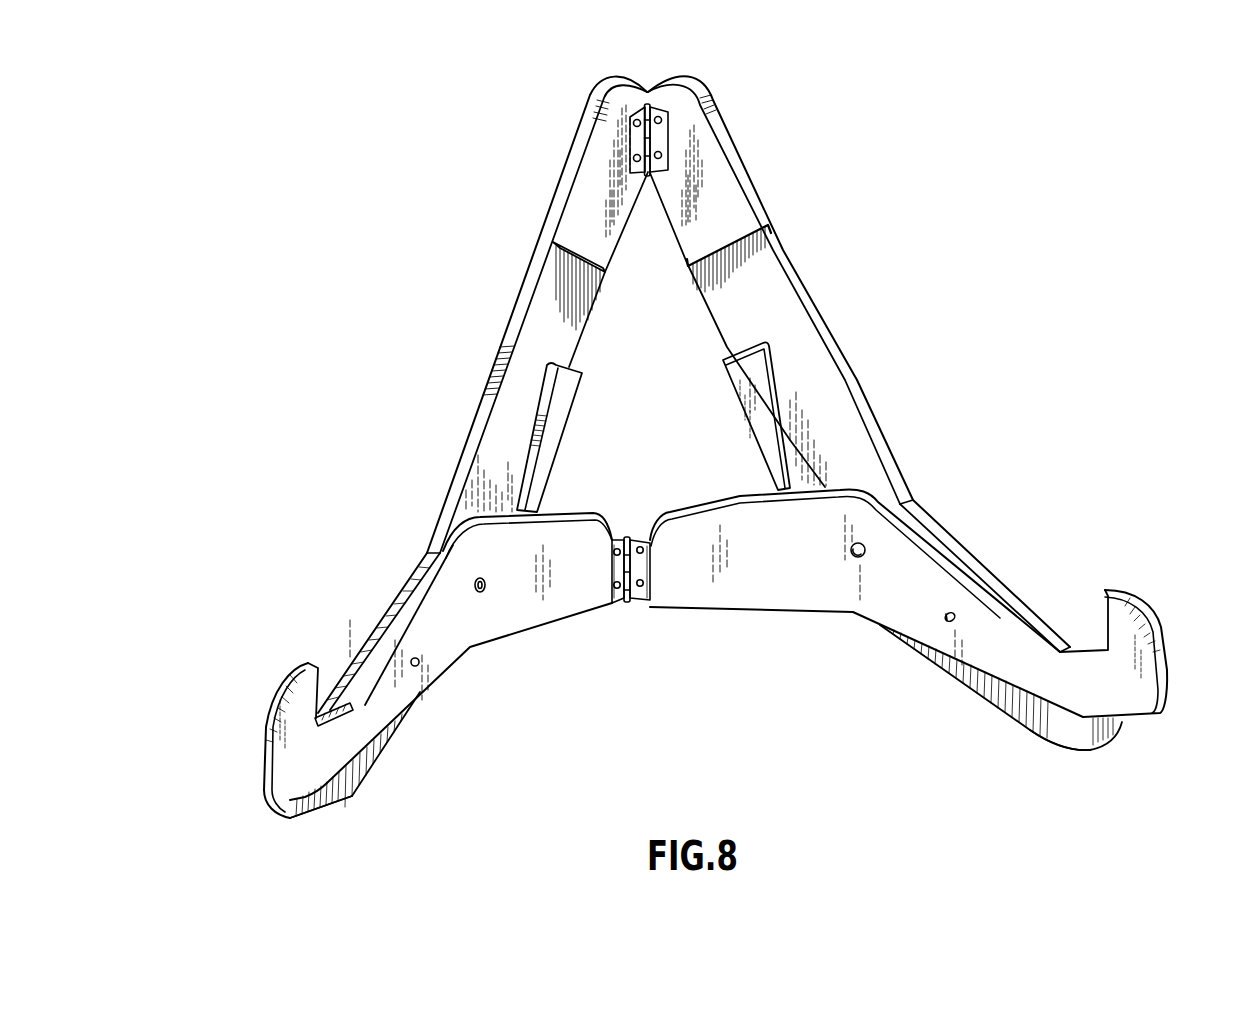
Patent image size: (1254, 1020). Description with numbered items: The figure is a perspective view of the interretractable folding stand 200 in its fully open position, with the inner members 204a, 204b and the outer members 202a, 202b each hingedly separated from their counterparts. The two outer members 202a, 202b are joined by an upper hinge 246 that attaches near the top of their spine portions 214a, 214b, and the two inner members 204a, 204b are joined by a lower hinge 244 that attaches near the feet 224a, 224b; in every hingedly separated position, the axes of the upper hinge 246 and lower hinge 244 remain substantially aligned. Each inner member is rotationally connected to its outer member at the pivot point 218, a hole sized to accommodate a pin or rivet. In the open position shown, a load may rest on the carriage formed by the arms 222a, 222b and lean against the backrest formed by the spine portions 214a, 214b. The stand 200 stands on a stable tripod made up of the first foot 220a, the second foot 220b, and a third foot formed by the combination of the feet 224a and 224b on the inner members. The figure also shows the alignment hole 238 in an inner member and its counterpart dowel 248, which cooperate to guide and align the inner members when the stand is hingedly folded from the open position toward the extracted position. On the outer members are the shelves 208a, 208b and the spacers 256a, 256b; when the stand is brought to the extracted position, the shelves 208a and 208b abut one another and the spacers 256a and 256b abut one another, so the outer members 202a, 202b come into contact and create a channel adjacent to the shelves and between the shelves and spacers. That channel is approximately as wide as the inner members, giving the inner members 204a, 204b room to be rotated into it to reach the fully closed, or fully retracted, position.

The interretractable folding stand 200 is at (868, 116).
The outer member 202a is at (545, 282).
The outer member 202b is at (773, 257).
The inner member 204a is at (518, 617).
The inner member 204b is at (805, 588).
The shelf 208a is at (565, 410).
The shelf 208b is at (768, 440).
The spine portion 214a is at (460, 404).
The spine portion 214b is at (879, 369).
The pivot point 218 is at (849, 551).
The first foot 220a is at (311, 818).
The second foot 220b is at (1037, 736).
The arm 222a is at (259, 754).
The arm 222b is at (1139, 722).
The foot 224a is at (612, 604).
The foot 224b is at (640, 605).
The alignment hole 238 is at (418, 668).
The lower hinge 244 is at (627, 536).
The upper hinge 246 is at (647, 104).
The dowel 248 is at (951, 610).
The spacer 256a is at (610, 247).
The spacer 256b is at (700, 240).